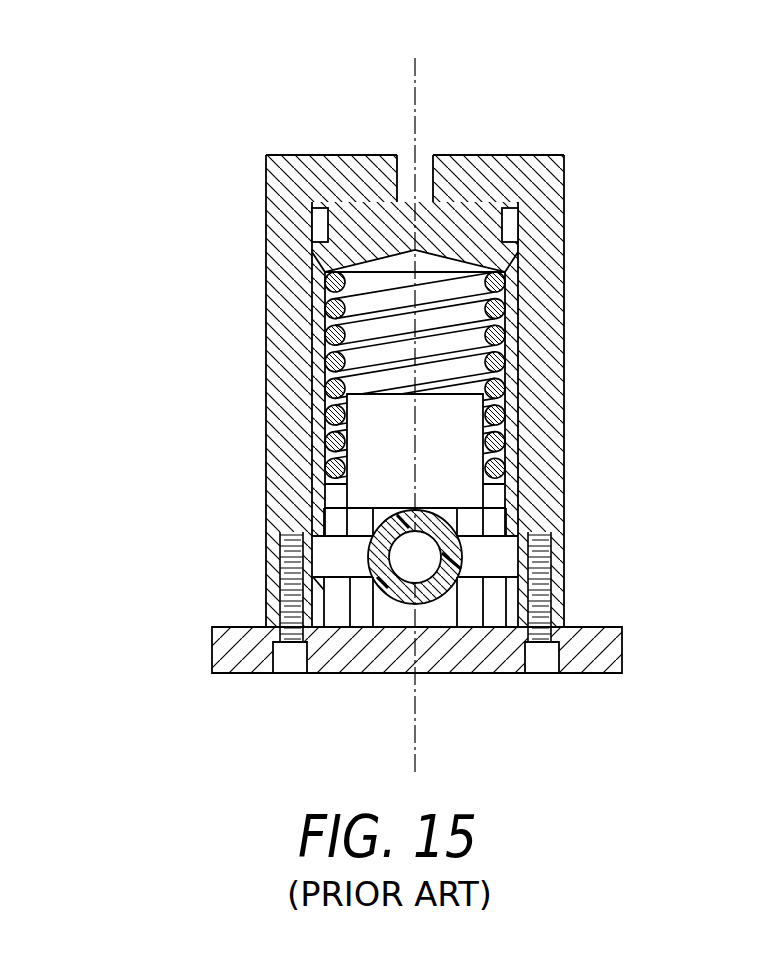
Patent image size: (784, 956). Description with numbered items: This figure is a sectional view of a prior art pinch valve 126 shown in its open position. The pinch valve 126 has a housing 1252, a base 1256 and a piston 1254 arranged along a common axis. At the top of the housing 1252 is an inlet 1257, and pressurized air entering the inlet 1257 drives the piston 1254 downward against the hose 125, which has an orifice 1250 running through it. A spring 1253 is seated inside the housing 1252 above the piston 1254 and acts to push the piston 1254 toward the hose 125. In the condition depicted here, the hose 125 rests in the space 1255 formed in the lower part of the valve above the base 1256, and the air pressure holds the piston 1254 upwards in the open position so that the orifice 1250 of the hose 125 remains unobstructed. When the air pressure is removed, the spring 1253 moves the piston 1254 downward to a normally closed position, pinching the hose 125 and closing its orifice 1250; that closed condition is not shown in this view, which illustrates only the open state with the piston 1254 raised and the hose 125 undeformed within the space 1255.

The pinch valve 126 is at (580, 148).
The inlet 1257 is at (427, 157).
The housing 1252 is at (542, 238).
The spring 1253 is at (505, 301).
The piston 1254 is at (465, 418).
The hose 125 is at (440, 520).
The orifice 1250 is at (403, 553).
The space 1255 is at (500, 553).
The base 1256 is at (484, 603).